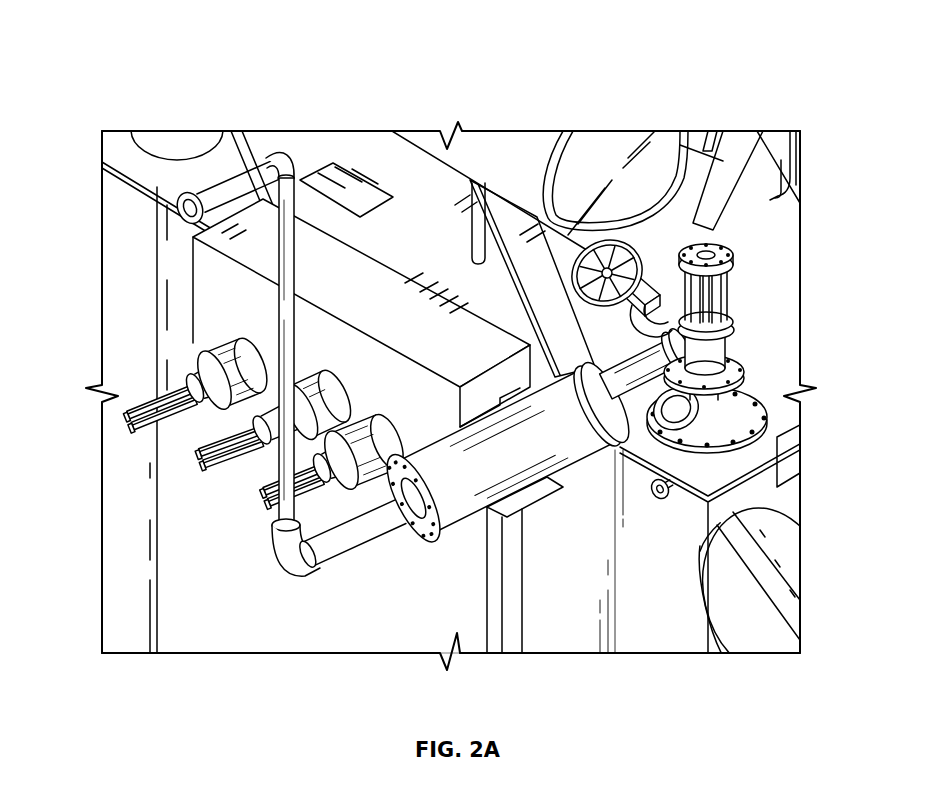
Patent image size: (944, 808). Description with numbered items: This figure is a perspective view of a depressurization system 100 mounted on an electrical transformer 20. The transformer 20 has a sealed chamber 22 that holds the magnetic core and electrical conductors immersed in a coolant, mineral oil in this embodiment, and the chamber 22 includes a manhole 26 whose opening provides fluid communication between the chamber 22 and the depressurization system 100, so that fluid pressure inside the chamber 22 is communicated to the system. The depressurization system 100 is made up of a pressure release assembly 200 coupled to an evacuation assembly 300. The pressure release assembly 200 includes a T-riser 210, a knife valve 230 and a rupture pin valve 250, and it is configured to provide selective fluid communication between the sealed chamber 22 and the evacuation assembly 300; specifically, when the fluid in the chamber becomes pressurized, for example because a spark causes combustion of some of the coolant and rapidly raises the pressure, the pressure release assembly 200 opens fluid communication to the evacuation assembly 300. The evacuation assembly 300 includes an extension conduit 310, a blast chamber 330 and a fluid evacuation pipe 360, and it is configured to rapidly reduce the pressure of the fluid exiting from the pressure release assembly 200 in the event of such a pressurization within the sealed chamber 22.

The depressurization system 100 is at (139, 69).
The pressure release assembly 200 is at (777, 205).
The evacuation assembly 300 is at (207, 268).
The fluid evacuation pipe 360 is at (288, 162).
The blast chamber 330 is at (570, 440).
The extension conduit 310 is at (628, 384).
The knife valve 230 is at (640, 290).
The rupture pin valve 250 is at (715, 348).
The T-riser 210 is at (737, 389).
The manhole 26 is at (707, 437).
The electrical transformer 20 is at (537, 553).
The sealed chamber 22 is at (654, 640).